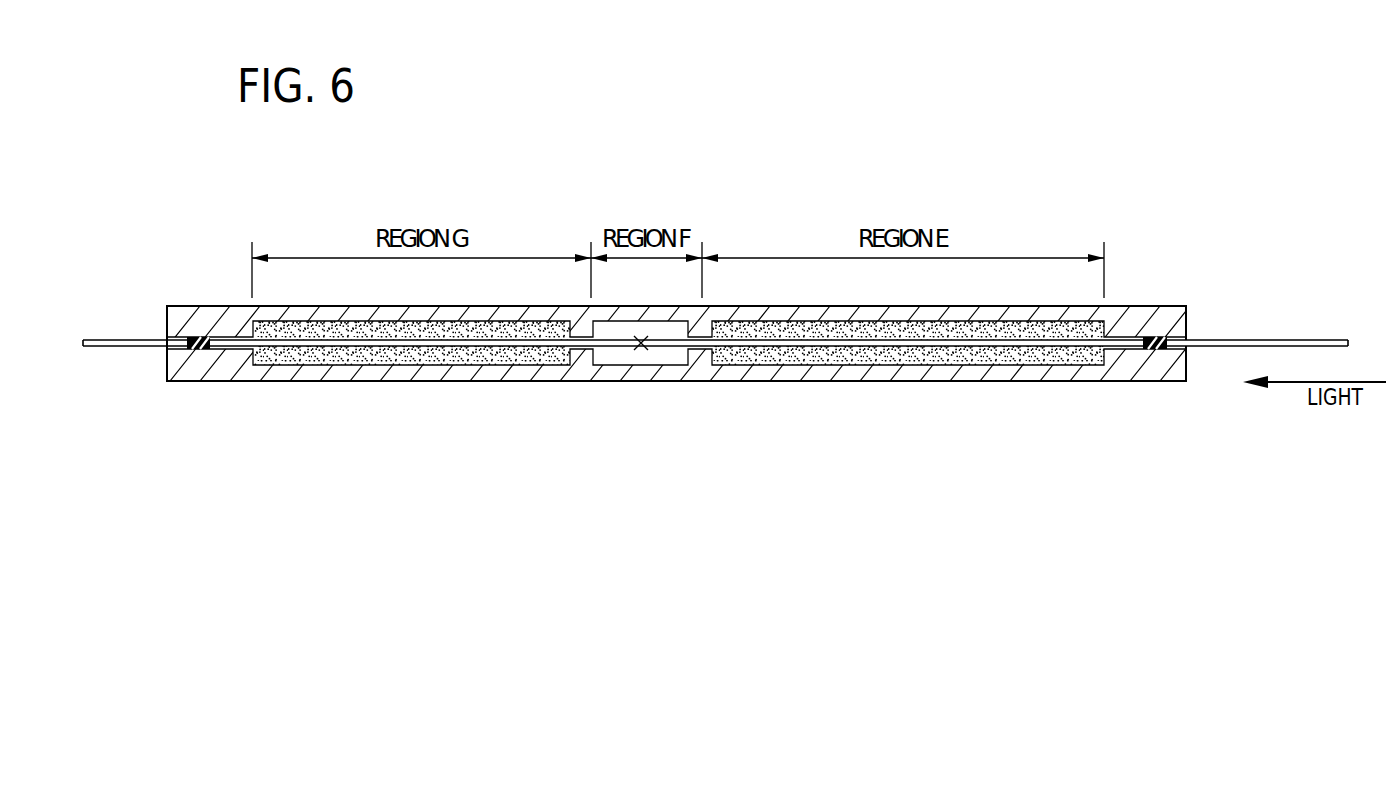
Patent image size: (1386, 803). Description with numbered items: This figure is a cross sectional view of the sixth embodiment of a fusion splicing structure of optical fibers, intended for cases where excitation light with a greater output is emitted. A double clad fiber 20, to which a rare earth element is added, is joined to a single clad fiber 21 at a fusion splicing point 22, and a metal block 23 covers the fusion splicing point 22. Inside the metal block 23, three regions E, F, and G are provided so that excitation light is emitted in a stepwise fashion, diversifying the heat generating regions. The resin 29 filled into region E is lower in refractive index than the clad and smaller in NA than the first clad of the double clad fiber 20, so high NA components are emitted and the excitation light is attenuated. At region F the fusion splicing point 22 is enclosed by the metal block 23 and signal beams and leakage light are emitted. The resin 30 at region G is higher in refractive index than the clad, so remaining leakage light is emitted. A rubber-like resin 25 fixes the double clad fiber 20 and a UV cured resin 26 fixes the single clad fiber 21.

The double clad fiber 20 is at (1307, 339).
The single clad fiber 21 is at (128, 337).
The fusion splicing point 22 is at (641, 350).
The metal block 23 is at (1160, 311).
The rubber-like resin 25 is at (1163, 351).
The UV cured resin 26 is at (202, 350).
The resin 29 is at (914, 357).
The resin 30 is at (445, 351).